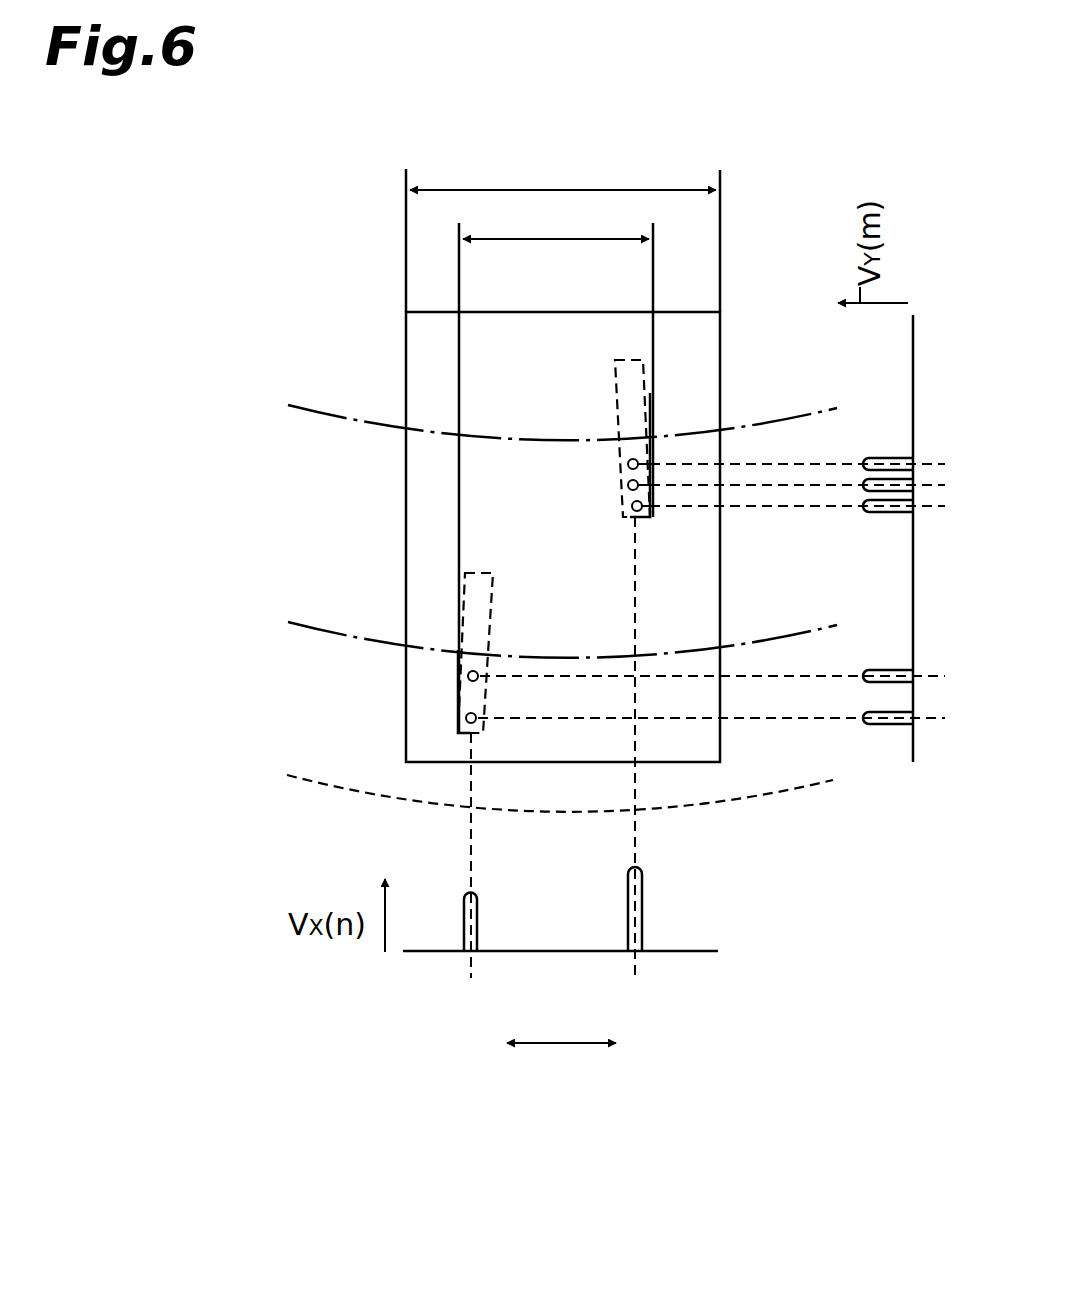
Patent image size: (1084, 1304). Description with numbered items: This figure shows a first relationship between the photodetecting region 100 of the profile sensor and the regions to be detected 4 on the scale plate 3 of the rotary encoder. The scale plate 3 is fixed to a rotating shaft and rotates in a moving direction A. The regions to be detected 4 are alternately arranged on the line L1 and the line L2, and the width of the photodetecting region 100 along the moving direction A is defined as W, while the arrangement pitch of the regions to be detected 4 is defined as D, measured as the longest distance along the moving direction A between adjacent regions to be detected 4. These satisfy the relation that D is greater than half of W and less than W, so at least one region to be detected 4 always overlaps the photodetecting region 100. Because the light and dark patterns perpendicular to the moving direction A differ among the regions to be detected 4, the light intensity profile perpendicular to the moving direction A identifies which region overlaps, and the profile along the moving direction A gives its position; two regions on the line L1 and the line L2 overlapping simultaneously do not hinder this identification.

The photodetecting region 100 is at (404, 700).
The region to be detected 4 is at (652, 392).
The scale plate 3 is at (790, 793).
The line L1 is at (333, 417).
The line L2 is at (333, 632).
The width of photodetecting region W is at (563, 232).
The arrangement pitch D is at (556, 467).
The moving direction A is at (572, 1045).